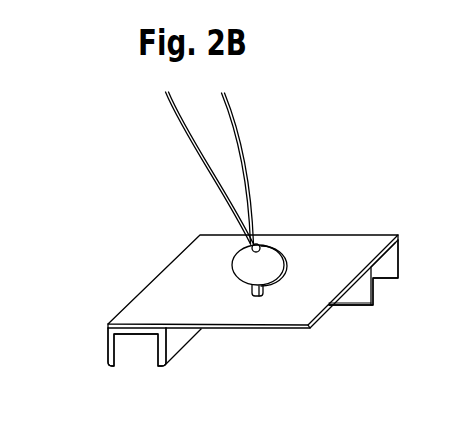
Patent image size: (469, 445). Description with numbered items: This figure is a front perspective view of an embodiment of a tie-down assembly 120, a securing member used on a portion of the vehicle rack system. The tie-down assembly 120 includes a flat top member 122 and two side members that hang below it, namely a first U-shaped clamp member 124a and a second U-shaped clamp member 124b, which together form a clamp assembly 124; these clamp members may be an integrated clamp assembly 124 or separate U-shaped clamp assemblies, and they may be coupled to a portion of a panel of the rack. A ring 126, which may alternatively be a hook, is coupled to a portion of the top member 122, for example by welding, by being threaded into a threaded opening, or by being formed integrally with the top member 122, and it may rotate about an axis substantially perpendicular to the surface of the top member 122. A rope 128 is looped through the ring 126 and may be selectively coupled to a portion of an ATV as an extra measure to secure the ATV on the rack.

The tie-down assembly 120 is at (255, 325).
The top member 122 is at (200, 311).
The clamp assembly 124 is at (120, 351).
The first U-shaped clamp member 124a is at (143, 339).
The second U-shaped clamp member 124b is at (399, 263).
The ring 126 is at (265, 246).
The rope 128 is at (247, 172).